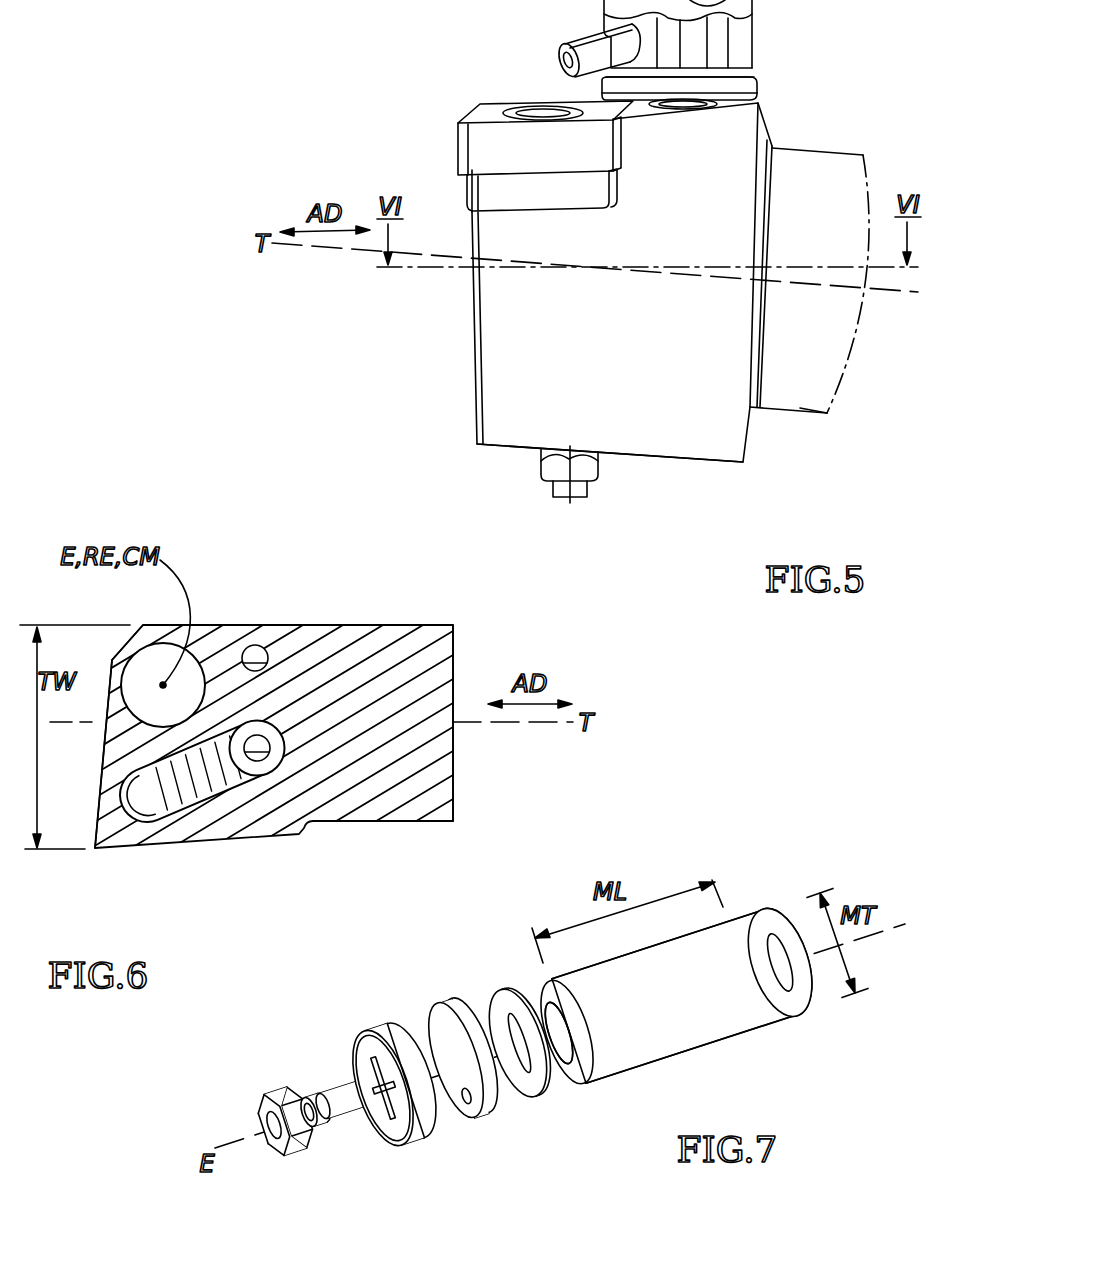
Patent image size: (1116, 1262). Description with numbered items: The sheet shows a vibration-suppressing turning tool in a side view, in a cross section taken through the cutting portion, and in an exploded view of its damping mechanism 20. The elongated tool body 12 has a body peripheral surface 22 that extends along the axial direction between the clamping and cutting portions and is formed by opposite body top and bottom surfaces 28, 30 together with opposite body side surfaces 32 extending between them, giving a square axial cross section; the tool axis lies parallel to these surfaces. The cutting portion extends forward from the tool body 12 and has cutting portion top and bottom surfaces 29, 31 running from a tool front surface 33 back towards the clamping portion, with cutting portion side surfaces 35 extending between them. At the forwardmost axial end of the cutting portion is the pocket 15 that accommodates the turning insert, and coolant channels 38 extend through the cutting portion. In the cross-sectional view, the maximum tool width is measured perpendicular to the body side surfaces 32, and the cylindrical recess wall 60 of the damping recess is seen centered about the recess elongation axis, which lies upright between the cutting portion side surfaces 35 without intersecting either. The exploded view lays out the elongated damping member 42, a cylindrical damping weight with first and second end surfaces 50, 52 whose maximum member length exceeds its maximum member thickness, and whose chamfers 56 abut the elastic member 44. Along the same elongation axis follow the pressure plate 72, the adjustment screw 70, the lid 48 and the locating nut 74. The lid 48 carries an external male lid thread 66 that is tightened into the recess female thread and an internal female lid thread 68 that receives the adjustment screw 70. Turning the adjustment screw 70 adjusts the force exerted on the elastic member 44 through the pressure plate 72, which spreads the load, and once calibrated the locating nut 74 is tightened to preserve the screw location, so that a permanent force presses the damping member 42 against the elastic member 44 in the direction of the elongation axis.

In FIG. 6, the tool body 12 is at (425, 598).
In FIG. 5, the pocket 15 is at (455, 103).
In FIG. 6, the damping mechanism 20 is at (226, 600).
In FIG. 5, the body peripheral surface 22 is at (850, 185).
In FIG. 6, the body peripheral surface 22 is at (368, 833).
In FIG. 5, the body top surface 28 is at (818, 147).
In FIG. 5, the cutting portion top surface 29 is at (752, 104).
In FIG. 5, the body bottom surface 30 is at (798, 409).
In FIG. 5, the cutting portion bottom surface 31 is at (673, 465).
In FIG. 5, the body side surfaces 32 is at (787, 387).
In FIG. 6, the body side surfaces 32 is at (368, 624).
In FIG. 5, the tool front surface 33 is at (474, 330).
In FIG. 6, the tool front surface 33 is at (98, 822).
In FIG. 5, the cutting portion side surfaces 35 is at (498, 363).
In FIG. 6, the cutting portion side surfaces 35 is at (232, 632).
In FIG. 6, the coolant channels 38 is at (270, 658).
In FIG. 7, the damping member 42 is at (669, 838).
In FIG. 7, the elastic member 44 is at (533, 1095).
In FIG. 7, the lid 48 is at (406, 1022).
In FIG. 7, the first end surface 50 is at (766, 918).
In FIG. 7, the second end surface 52 is at (562, 1037).
In FIG. 7, the chamfer 56 is at (548, 988).
In FIG. 6, the recess wall 60 is at (171, 645).
In FIG. 7, the external male lid thread 66 is at (390, 1030).
In FIG. 7, the internal female lid thread 68 is at (367, 1095).
In FIG. 7, the adjustment screw 70 is at (347, 1118).
In FIG. 7, the pressure plate 72 is at (478, 1105).
In FIG. 7, the locating nut 74 is at (299, 1150).